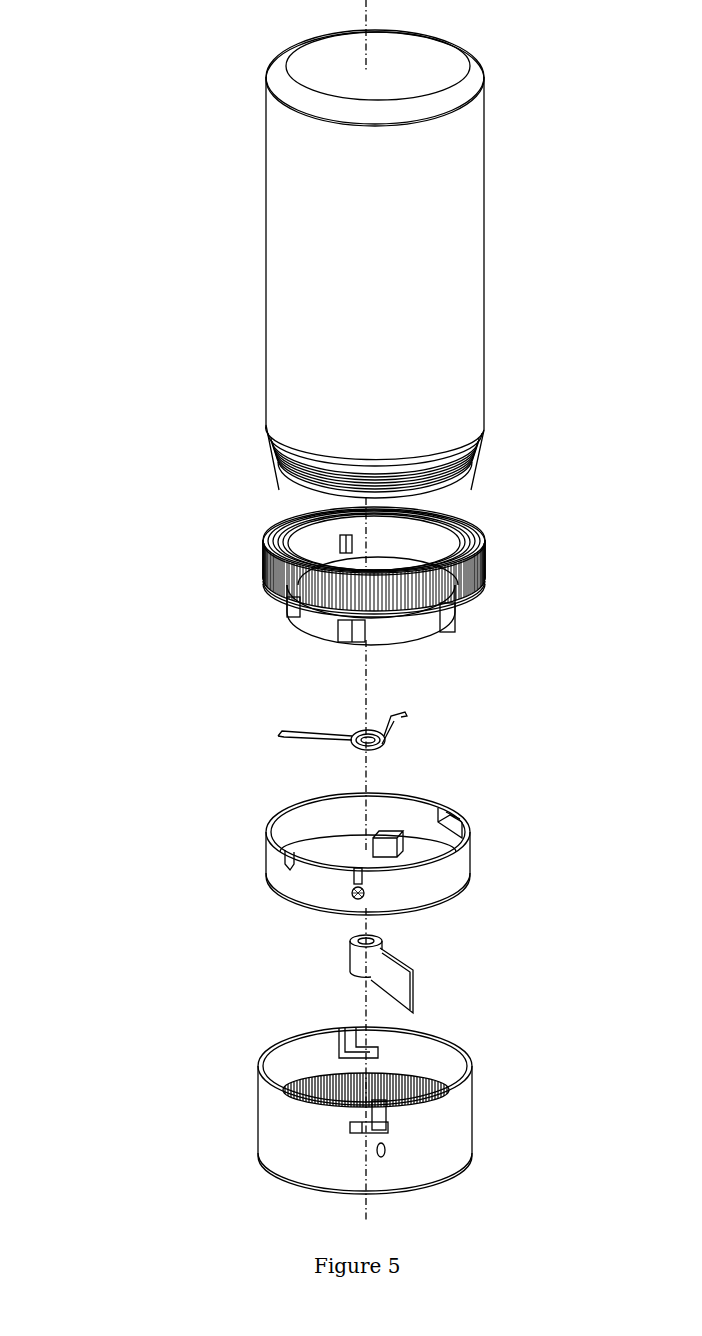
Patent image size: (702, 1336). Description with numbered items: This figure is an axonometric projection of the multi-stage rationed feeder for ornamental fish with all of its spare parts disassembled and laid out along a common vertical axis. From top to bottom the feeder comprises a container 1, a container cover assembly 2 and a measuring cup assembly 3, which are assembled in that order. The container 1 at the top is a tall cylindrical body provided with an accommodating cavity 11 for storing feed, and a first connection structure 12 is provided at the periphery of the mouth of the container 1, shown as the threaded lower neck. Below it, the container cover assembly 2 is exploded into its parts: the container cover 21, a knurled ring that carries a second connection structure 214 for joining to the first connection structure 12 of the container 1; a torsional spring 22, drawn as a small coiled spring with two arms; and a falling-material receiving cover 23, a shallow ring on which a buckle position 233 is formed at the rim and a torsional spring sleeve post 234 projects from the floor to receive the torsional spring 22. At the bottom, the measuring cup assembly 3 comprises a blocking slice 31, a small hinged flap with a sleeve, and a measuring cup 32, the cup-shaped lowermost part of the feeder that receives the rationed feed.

The container 1 is at (143, 440).
The accommodating cavity 11 is at (343, 318).
The first connection structure 12 is at (280, 472).
The container cover assembly 2 is at (118, 585).
The container cover 21 is at (262, 560).
The second connection structure 214 is at (286, 535).
The torsional spring 22 is at (268, 735).
The falling-material receiving cover 23 is at (265, 857).
The buckle position 233 is at (452, 820).
The torsional spring sleeve post 234 is at (390, 828).
The measuring cup assembly 3 is at (122, 1083).
The blocking slice 31 is at (343, 963).
The measuring cup 32 is at (258, 1100).